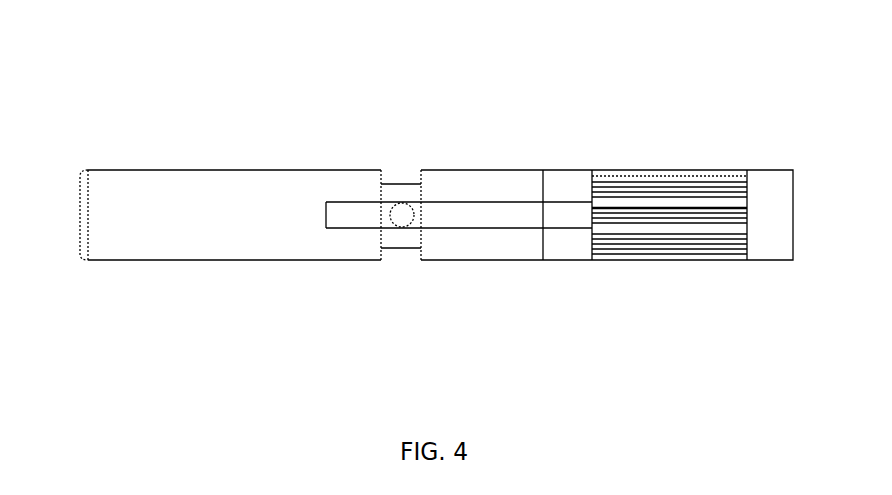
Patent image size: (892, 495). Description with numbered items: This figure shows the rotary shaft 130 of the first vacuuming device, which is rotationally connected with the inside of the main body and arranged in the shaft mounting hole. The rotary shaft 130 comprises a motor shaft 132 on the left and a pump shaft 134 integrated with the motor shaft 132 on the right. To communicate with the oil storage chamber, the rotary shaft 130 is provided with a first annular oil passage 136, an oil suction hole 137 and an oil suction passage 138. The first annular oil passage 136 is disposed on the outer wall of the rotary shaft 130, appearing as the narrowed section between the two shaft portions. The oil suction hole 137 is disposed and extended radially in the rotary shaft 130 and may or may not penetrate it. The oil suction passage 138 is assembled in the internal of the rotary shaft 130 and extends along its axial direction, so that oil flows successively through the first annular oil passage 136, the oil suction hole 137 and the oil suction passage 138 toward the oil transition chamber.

The rotary shaft 130 is at (585, 75).
The motor shaft 132 is at (272, 205).
The pump shaft 134 is at (574, 195).
The first annular oil passage 136 is at (393, 253).
The oil suction hole 137 is at (402, 217).
The oil suction passage 138 is at (490, 213).